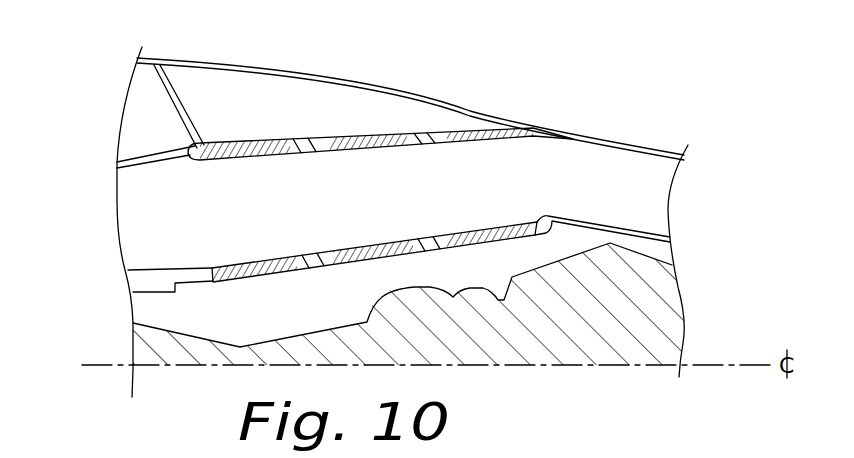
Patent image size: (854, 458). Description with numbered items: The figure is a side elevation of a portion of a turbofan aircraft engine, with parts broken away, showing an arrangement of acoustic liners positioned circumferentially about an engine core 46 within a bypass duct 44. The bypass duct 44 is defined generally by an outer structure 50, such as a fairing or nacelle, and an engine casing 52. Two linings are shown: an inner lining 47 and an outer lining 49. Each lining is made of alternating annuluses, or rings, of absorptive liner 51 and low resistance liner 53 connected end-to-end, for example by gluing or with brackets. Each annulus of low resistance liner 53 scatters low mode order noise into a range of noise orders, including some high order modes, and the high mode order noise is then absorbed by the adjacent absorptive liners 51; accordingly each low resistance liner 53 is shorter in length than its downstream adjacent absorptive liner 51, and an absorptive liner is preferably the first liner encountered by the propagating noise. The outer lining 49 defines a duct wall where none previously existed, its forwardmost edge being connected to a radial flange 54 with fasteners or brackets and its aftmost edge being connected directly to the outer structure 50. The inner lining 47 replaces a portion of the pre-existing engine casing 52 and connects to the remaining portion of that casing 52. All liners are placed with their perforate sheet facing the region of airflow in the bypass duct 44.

The bypass duct 44 is at (147, 193).
The engine core 46 is at (242, 342).
The inner lining 47 is at (260, 245).
The outer lining 49 is at (222, 178).
The outer structure 50 is at (188, 58).
The absorptive liner 51 is at (265, 142).
The engine casing 52 is at (145, 277).
The low resistance liner 53 is at (303, 149).
The radial flange 54 is at (206, 142).